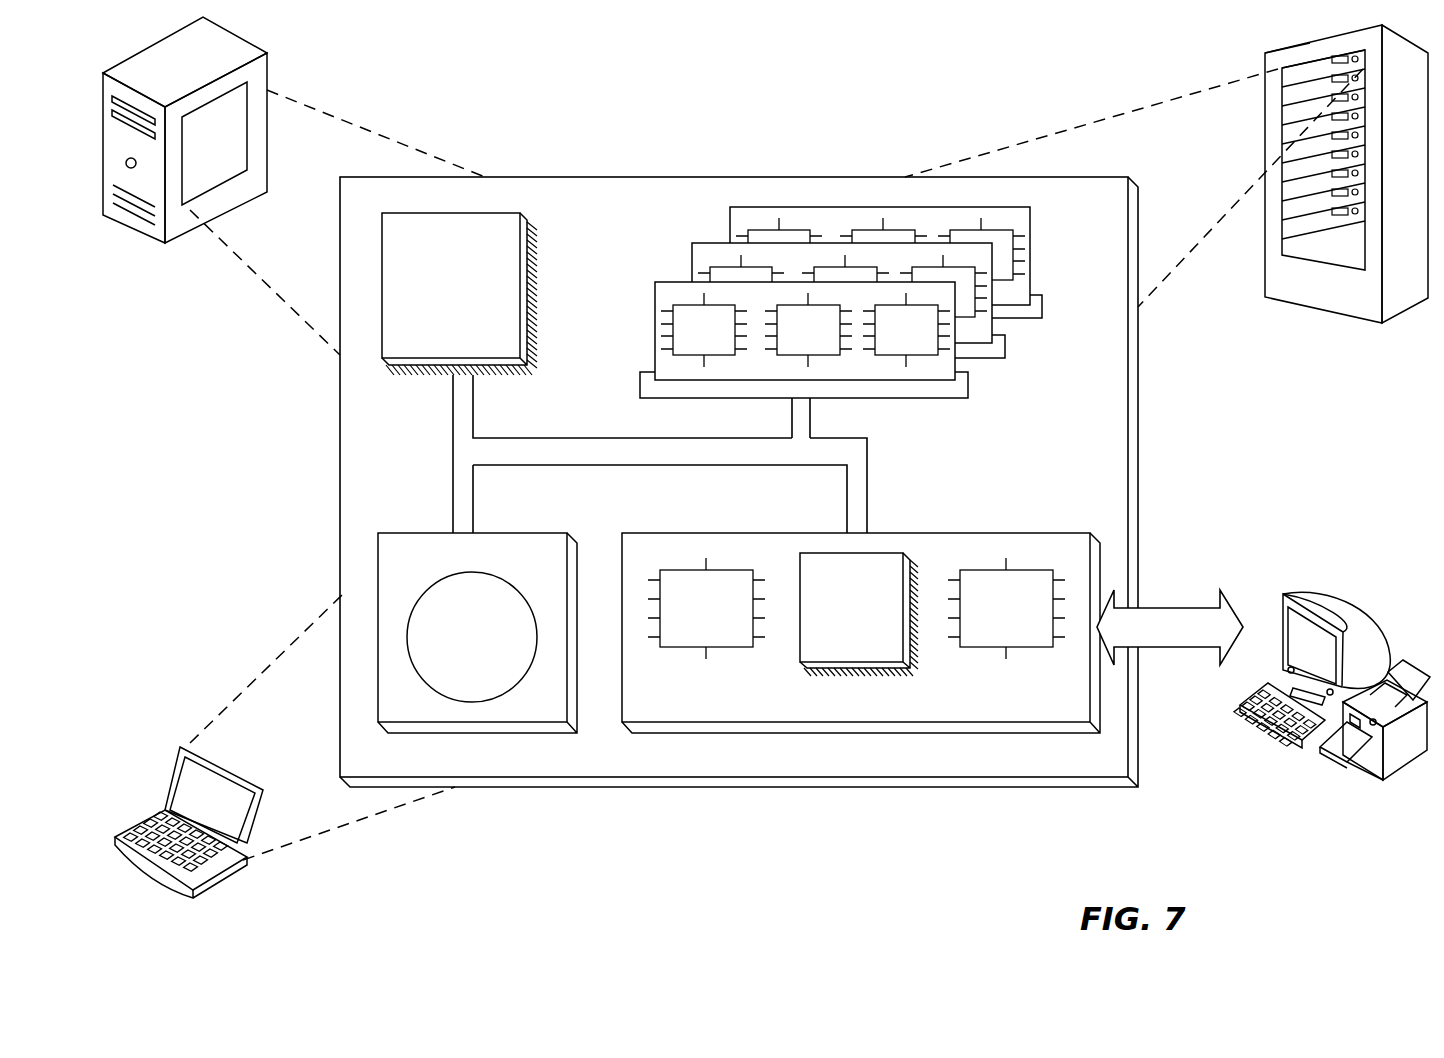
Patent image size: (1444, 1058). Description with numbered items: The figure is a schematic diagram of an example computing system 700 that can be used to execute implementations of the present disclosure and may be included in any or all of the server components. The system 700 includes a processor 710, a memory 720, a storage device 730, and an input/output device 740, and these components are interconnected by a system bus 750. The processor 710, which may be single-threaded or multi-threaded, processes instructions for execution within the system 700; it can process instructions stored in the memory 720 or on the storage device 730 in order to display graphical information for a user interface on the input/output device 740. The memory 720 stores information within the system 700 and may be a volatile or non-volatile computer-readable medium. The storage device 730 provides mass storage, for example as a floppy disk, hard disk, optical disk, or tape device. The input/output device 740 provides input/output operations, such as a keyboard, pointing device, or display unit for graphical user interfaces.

The computing system 700 is at (549, 90).
The processor 710 is at (459, 294).
The memory 720 is at (1042, 360).
The storage device 730 is at (477, 633).
The input/output device 740 is at (1283, 596).
The system bus 750 is at (655, 457).